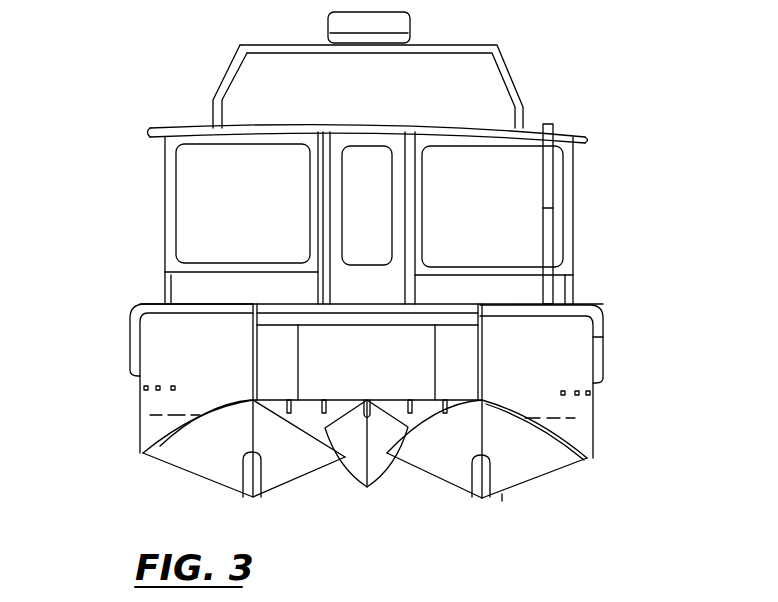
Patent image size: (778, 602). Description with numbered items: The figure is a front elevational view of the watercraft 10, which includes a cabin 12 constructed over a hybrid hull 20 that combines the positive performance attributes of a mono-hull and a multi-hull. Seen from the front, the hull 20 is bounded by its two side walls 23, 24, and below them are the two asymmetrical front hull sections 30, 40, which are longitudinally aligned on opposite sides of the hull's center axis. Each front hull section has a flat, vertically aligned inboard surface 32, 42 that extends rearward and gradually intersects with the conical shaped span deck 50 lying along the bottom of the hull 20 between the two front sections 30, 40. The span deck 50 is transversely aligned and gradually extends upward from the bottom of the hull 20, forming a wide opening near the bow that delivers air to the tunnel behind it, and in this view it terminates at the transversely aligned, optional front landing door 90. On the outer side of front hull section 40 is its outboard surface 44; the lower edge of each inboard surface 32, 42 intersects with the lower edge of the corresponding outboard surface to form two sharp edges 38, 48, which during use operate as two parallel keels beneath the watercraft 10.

The watercraft 10 is at (150, 83).
The cabin 12 is at (583, 127).
The hybrid hull 20 is at (129, 322).
The side wall 23 is at (147, 416).
The side wall 24 is at (587, 420).
The asymmetrical front hull section 30 is at (206, 477).
The inboard surface 32 is at (176, 460).
The sharp edge 38 is at (250, 498).
The asymmetrical front hull section 40 is at (507, 487).
The inboard surface 42 is at (438, 480).
The outboard surface 44 is at (550, 472).
The sharp edge 48 is at (481, 503).
The span deck 50 is at (313, 422).
The front landing door 90 is at (367, 376).